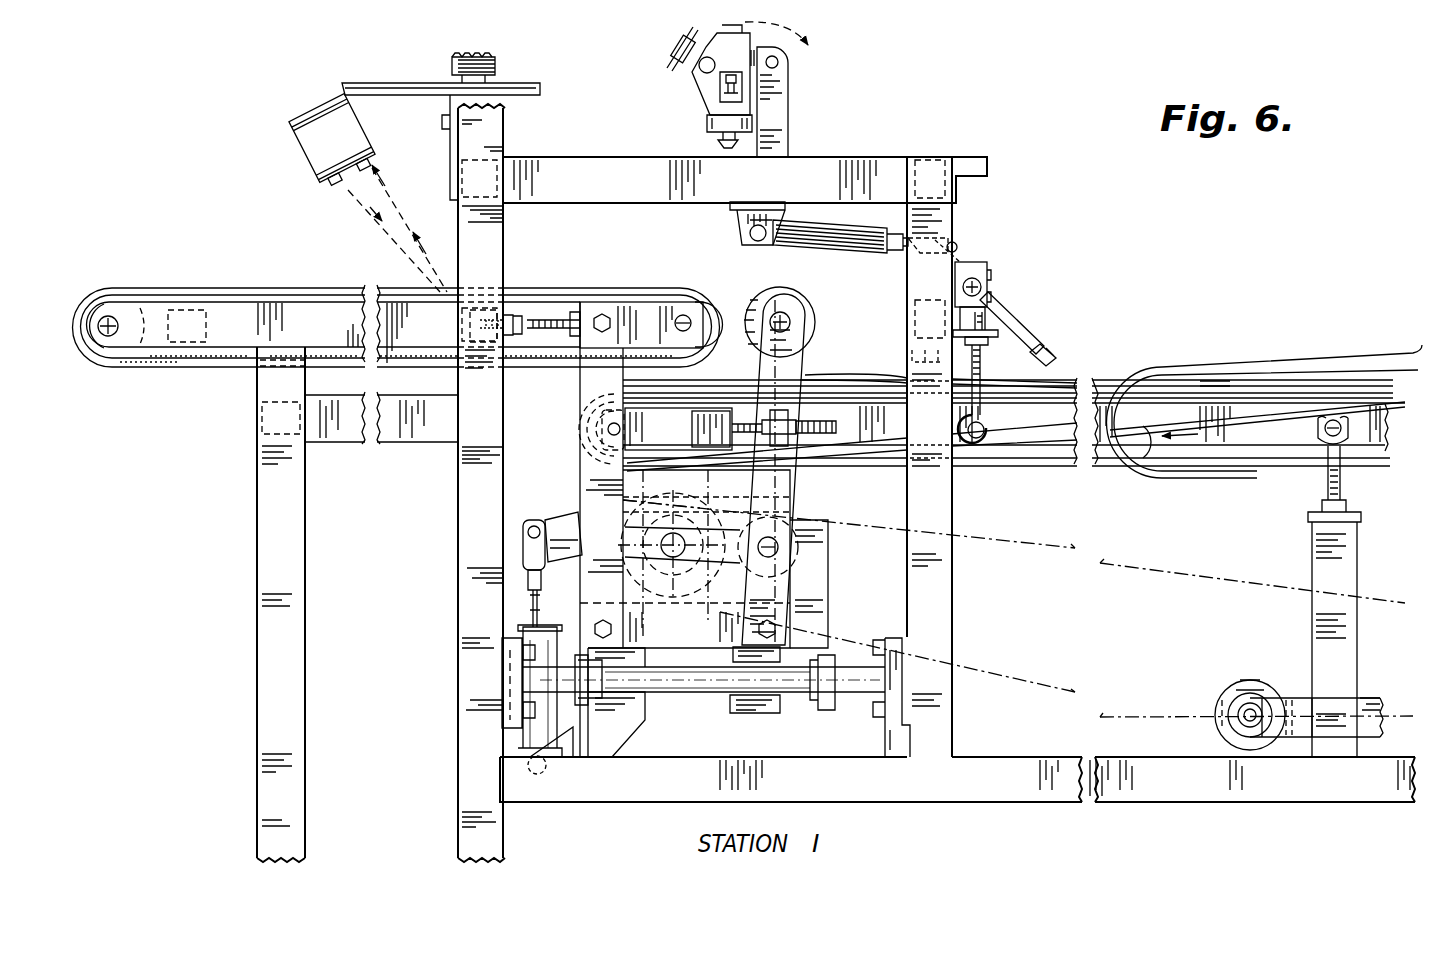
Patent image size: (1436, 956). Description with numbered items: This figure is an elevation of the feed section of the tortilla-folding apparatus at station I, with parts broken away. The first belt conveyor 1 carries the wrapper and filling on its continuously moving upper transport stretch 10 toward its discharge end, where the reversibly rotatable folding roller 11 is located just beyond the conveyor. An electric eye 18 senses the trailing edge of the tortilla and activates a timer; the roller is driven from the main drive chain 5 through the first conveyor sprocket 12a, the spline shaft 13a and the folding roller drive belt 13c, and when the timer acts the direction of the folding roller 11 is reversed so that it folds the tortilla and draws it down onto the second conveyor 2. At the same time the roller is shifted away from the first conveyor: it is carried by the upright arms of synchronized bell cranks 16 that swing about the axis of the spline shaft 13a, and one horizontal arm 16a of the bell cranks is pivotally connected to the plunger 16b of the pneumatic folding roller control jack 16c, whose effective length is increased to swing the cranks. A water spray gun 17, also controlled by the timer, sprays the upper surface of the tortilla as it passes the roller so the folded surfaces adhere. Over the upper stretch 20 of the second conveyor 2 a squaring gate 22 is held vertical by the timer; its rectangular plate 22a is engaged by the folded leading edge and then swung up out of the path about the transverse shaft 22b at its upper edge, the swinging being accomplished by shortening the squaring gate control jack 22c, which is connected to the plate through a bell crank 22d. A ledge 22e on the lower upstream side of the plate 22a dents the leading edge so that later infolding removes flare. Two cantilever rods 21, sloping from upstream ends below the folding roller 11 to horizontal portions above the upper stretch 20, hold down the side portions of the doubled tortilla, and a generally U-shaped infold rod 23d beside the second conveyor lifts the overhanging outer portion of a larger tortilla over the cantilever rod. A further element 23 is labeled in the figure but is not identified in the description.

The belt conveyor 1 is at (195, 268).
The second conveyor 2 is at (1258, 332).
The main drive chain 5 is at (998, 676).
The upper transport stretch 10 is at (641, 300).
The folding roller 11 is at (814, 318).
The first conveyor sprocket 12a is at (666, 610).
The spline shaft 13a is at (815, 556).
The folding roller drive belt 13c is at (800, 485).
The bell cranks 16 is at (790, 512).
The horizontal arm 16a is at (570, 512).
The plunger 16b is at (530, 600).
The pneumatic folding roller control jack 16c is at (520, 637).
The water spray gun 17 is at (752, 118).
The electric eye 18 is at (342, 129).
The upper stretch 20 is at (658, 403).
The cantilever rods 21 is at (812, 384).
The squaring gate 22 is at (1030, 302).
The rectangular plate 22a is at (1022, 338).
The transverse shaft 22b is at (988, 282).
The squaring gate control jack 22c is at (850, 245).
The bell crank 22d is at (958, 256).
The ledge 22e is at (1052, 352).
The strip loop 23 is at (1380, 360).
The infold rod 23d is at (1303, 360).